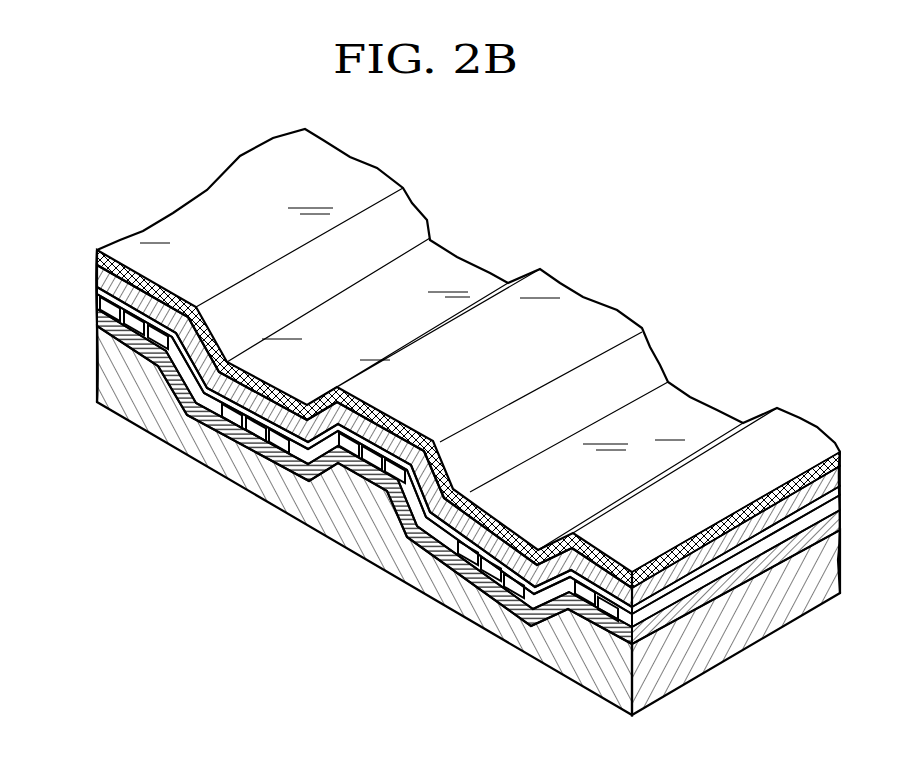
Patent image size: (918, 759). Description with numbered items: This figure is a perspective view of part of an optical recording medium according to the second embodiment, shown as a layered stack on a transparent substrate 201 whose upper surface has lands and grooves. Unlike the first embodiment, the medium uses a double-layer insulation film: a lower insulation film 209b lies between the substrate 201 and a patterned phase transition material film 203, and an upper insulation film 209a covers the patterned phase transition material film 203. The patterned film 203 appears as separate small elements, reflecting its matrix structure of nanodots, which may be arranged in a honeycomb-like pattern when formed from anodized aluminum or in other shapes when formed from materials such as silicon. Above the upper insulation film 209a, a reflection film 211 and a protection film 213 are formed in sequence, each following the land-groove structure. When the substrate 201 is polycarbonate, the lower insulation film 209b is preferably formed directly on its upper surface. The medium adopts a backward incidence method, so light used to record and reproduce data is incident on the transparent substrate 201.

The substrate 201 is at (108, 378).
The patterned phase transition material film 203 is at (100, 308).
The upper insulation film 209a is at (97, 290).
The lower insulation film 209b is at (100, 320).
The reflection film 211 is at (98, 266).
The protection film 213 is at (98, 250).